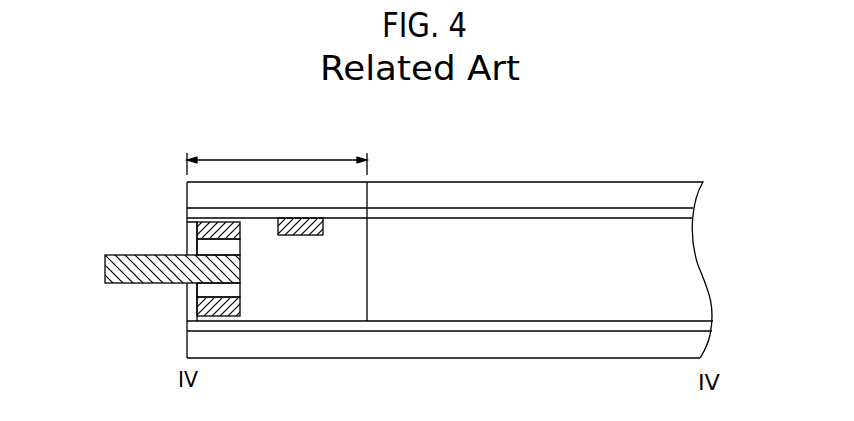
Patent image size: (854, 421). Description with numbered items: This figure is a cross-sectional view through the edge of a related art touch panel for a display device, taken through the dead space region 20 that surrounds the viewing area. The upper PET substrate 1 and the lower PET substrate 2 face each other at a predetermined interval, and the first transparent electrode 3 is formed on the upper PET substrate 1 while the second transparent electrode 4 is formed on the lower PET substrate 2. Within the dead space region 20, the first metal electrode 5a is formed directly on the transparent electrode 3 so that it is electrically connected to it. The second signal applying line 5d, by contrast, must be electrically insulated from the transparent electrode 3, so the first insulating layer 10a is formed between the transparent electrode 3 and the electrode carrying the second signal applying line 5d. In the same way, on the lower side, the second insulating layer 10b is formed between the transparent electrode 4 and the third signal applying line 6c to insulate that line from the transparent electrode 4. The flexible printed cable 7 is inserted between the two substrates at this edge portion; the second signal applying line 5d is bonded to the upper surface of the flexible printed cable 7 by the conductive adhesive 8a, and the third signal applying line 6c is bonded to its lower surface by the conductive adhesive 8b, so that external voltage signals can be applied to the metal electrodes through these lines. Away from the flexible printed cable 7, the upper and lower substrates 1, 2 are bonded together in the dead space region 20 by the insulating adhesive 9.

The upper PET substrate 1 is at (689, 200).
The lower PET substrate 2 is at (704, 343).
The first transparent electrode 3 is at (689, 216).
The second transparent electrode 4 is at (706, 327).
The first metal electrode 5a is at (324, 228).
The second signal applying line 5d is at (197, 229).
The third signal applying line 6c is at (198, 306).
The flexible printed cable 7 is at (107, 266).
The conductive adhesive 8a is at (198, 247).
The conductive adhesive 8b is at (200, 292).
The insulating adhesive 9 is at (308, 310).
The first insulating layer 10a is at (188, 222).
The second insulating layer 10b is at (188, 324).
The dead space region 20 is at (277, 154).